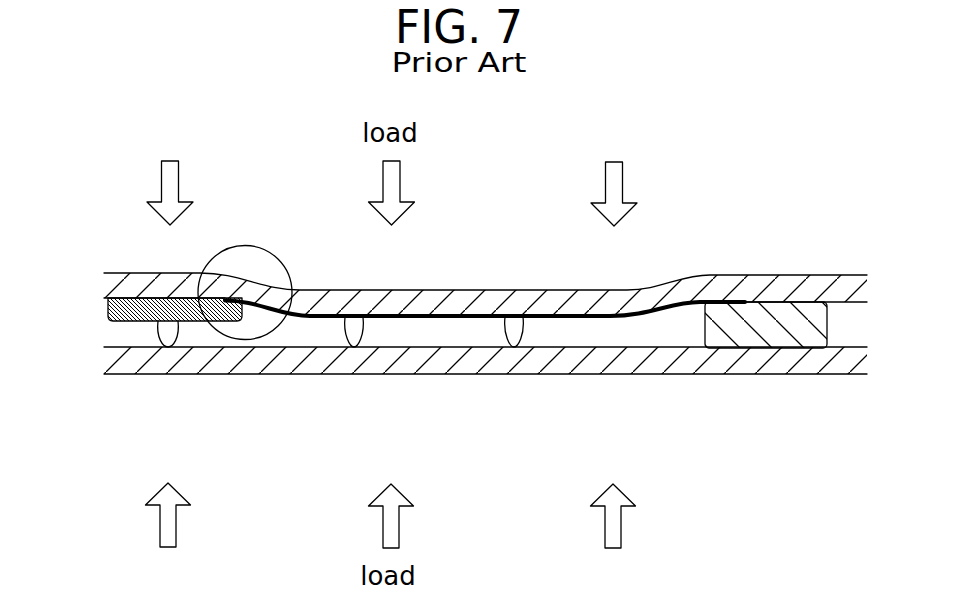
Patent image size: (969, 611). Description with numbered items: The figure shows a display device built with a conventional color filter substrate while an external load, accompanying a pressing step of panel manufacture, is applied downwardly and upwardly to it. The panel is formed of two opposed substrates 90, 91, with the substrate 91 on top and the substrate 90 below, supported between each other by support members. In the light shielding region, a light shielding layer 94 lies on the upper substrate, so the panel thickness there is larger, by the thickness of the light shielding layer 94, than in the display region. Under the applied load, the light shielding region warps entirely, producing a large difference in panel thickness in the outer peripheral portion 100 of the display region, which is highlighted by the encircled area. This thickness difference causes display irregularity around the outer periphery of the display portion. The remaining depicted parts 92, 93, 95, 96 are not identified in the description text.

The opposed substrate 90 is at (653, 368).
The opposed substrate 91 is at (753, 283).
The lower plate surface 92 is at (118, 336).
The electrode pad 93 is at (108, 301).
The light shielding layer 94 is at (436, 326).
The spacer 95 is at (767, 338).
The supports 96 is at (168, 338).
The outer peripheral portion of the display region 100 is at (243, 339).